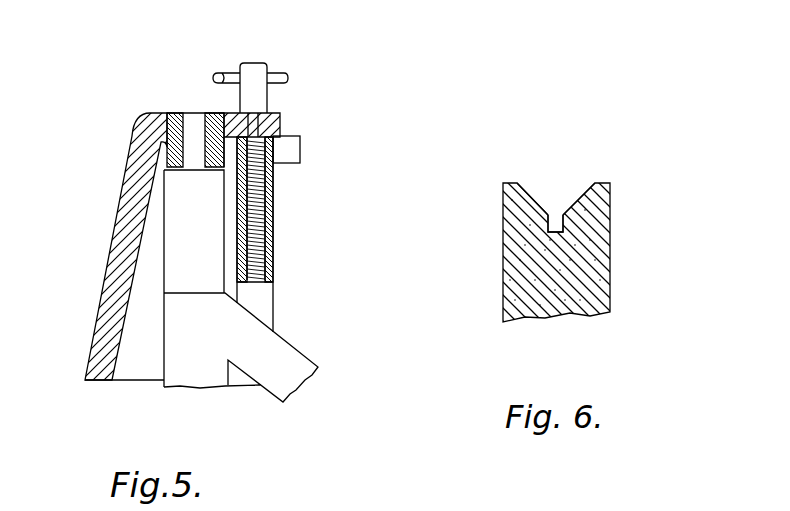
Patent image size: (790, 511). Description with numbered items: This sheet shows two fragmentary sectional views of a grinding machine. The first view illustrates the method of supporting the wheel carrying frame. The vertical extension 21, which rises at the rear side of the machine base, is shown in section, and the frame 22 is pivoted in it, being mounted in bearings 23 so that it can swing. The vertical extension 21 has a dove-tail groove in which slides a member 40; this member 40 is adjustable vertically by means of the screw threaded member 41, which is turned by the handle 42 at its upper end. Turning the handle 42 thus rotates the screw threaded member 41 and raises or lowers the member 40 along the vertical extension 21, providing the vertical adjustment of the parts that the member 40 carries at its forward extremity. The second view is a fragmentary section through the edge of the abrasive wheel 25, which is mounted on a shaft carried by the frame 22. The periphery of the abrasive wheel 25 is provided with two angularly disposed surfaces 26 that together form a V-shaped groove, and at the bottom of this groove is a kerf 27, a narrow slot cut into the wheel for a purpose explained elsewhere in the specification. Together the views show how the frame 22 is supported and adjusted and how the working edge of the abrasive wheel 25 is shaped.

In FIG. 5, the vertical extension 21 is at (128, 237).
In FIG. 5, the frame 22 is at (282, 347).
In FIG. 5, the bearings 23 is at (188, 128).
In FIG. 5, the member 40 is at (288, 155).
In FIG. 5, the screw threaded member 41 is at (265, 222).
In FIG. 5, the handle 42 is at (257, 87).
In FIG. 6, the abrasive wheel 25 is at (603, 262).
In FIG. 6, the angularly disposed surfaces 26 is at (574, 205).
In FIG. 6, the kerf 27 is at (562, 238).